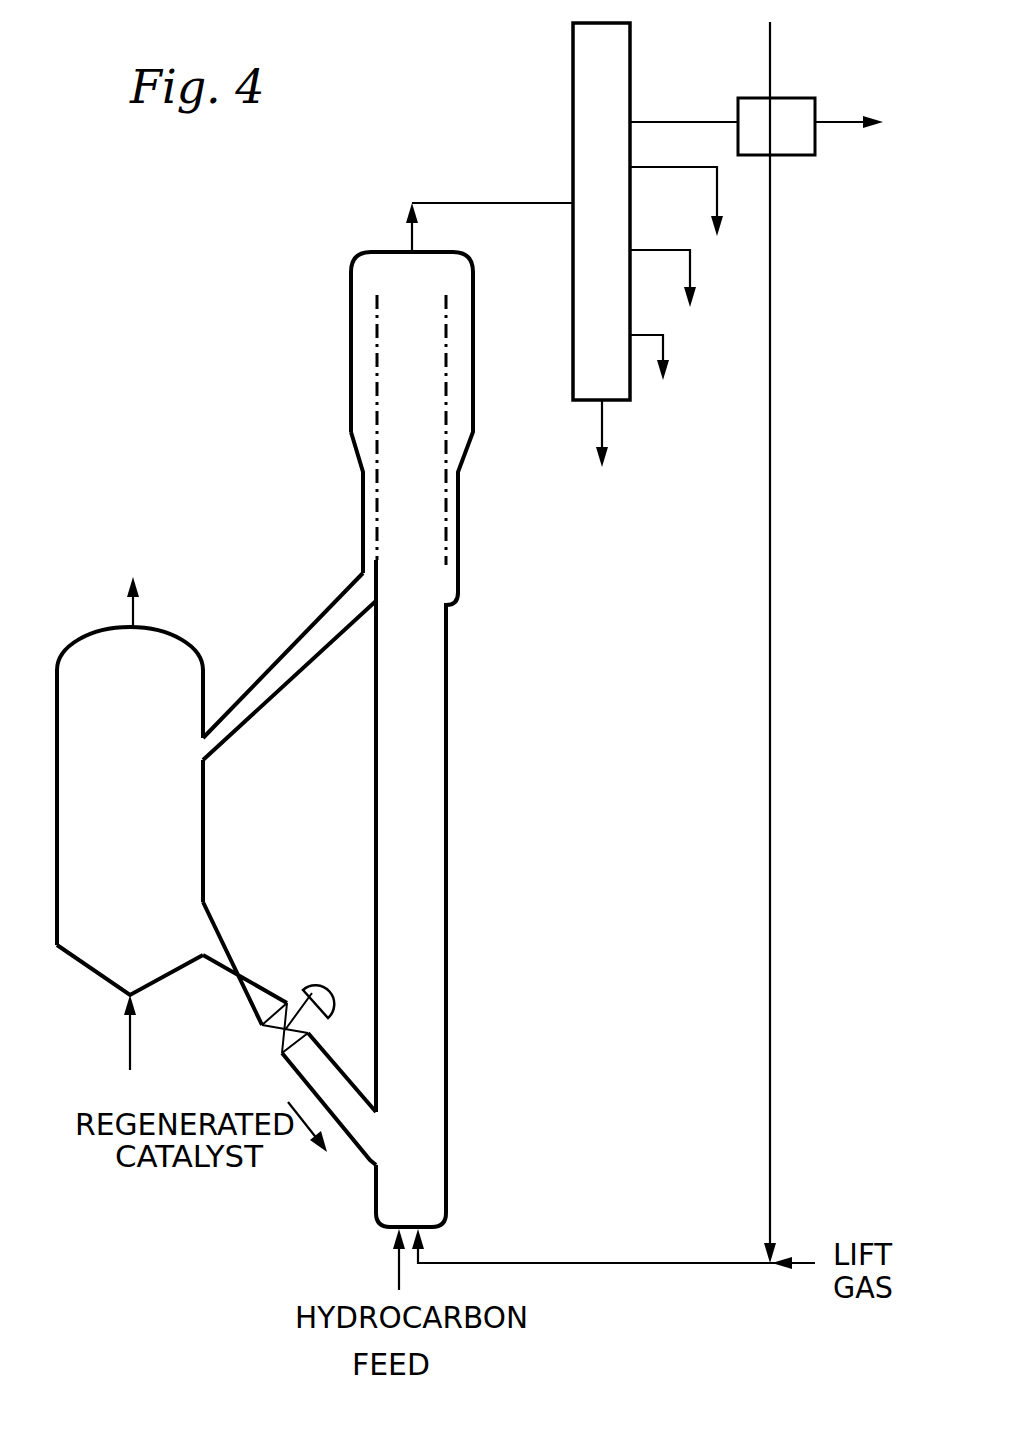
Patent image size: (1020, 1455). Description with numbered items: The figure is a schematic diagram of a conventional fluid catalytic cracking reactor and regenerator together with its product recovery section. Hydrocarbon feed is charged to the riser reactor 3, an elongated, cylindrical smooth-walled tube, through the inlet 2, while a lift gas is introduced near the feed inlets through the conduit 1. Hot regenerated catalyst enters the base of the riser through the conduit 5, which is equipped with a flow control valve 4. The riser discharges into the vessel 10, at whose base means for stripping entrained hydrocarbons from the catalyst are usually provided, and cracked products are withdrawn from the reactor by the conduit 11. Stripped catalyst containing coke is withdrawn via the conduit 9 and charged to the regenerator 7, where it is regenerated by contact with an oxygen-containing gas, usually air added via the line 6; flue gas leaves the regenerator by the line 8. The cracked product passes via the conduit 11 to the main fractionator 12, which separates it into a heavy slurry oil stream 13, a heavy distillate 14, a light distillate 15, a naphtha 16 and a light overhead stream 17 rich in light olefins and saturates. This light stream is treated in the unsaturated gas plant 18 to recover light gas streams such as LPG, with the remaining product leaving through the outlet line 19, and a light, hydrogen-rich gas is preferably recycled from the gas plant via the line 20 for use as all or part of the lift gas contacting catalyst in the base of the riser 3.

The conduit 1 is at (593, 1263).
The inlet 2 is at (395, 1275).
The riser reactor 3 is at (445, 792).
The flow control valve 4 is at (312, 993).
The conduit 5 is at (230, 933).
The line 6 is at (128, 1048).
The regenerator 7 is at (203, 790).
The line 8 is at (133, 612).
The conduit 9 is at (298, 638).
The vessel 10 is at (473, 342).
The conduit 11 is at (413, 237).
The main fractionator 12 is at (573, 75).
The heavy slurry oil stream 13 is at (600, 420).
The heavy distillate 14 is at (667, 367).
The light distillate 15 is at (693, 298).
The naphtha 16 is at (722, 217).
The light overhead stream 17 is at (657, 122).
The unsaturated gas plant 18 is at (770, 72).
The product gas outlet line 19 is at (833, 122).
The line 20 is at (770, 680).